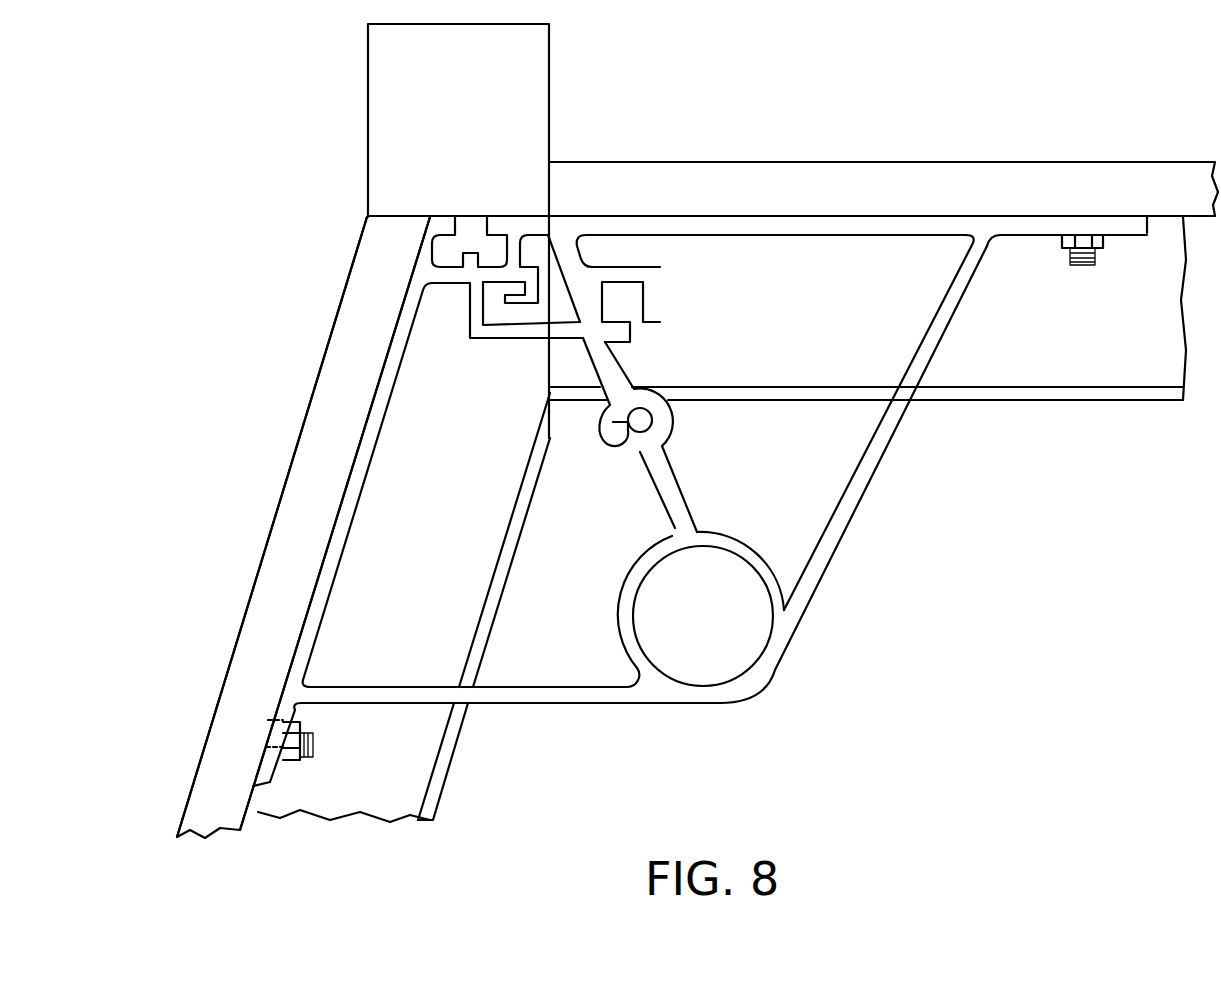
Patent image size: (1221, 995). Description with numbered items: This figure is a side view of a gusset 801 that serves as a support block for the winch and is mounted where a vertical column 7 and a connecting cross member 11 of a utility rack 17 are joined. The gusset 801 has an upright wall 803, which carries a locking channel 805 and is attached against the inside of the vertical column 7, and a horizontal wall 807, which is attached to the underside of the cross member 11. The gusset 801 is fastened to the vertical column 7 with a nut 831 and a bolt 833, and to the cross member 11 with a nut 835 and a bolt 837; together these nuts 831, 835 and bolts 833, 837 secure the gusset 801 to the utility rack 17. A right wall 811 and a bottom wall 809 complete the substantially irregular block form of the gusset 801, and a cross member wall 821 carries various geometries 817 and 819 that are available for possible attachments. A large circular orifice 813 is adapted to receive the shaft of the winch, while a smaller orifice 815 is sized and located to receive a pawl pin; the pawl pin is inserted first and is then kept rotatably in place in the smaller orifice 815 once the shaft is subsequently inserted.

The cross member 11 is at (938, 163).
The horizontal wall 807 is at (715, 213).
The locking channel 805 is at (433, 262).
The geometry for possible attachments 819 is at (662, 291).
The geometry for possible attachments 817 is at (522, 342).
The utility rack 17 is at (287, 348).
The vertical column 7 is at (290, 470).
The upright wall 803 is at (310, 565).
The nut 831 is at (300, 719).
The bolt 833 is at (303, 758).
The bottom wall 809 is at (520, 704).
The smaller orifice 815 is at (593, 423).
The cross member wall 821 is at (675, 478).
The large circular orifice 813 is at (746, 537).
The right wall 811 is at (886, 452).
The gusset 801 is at (868, 580).
The nut 835 is at (1105, 240).
The bolt 837 is at (1067, 258).